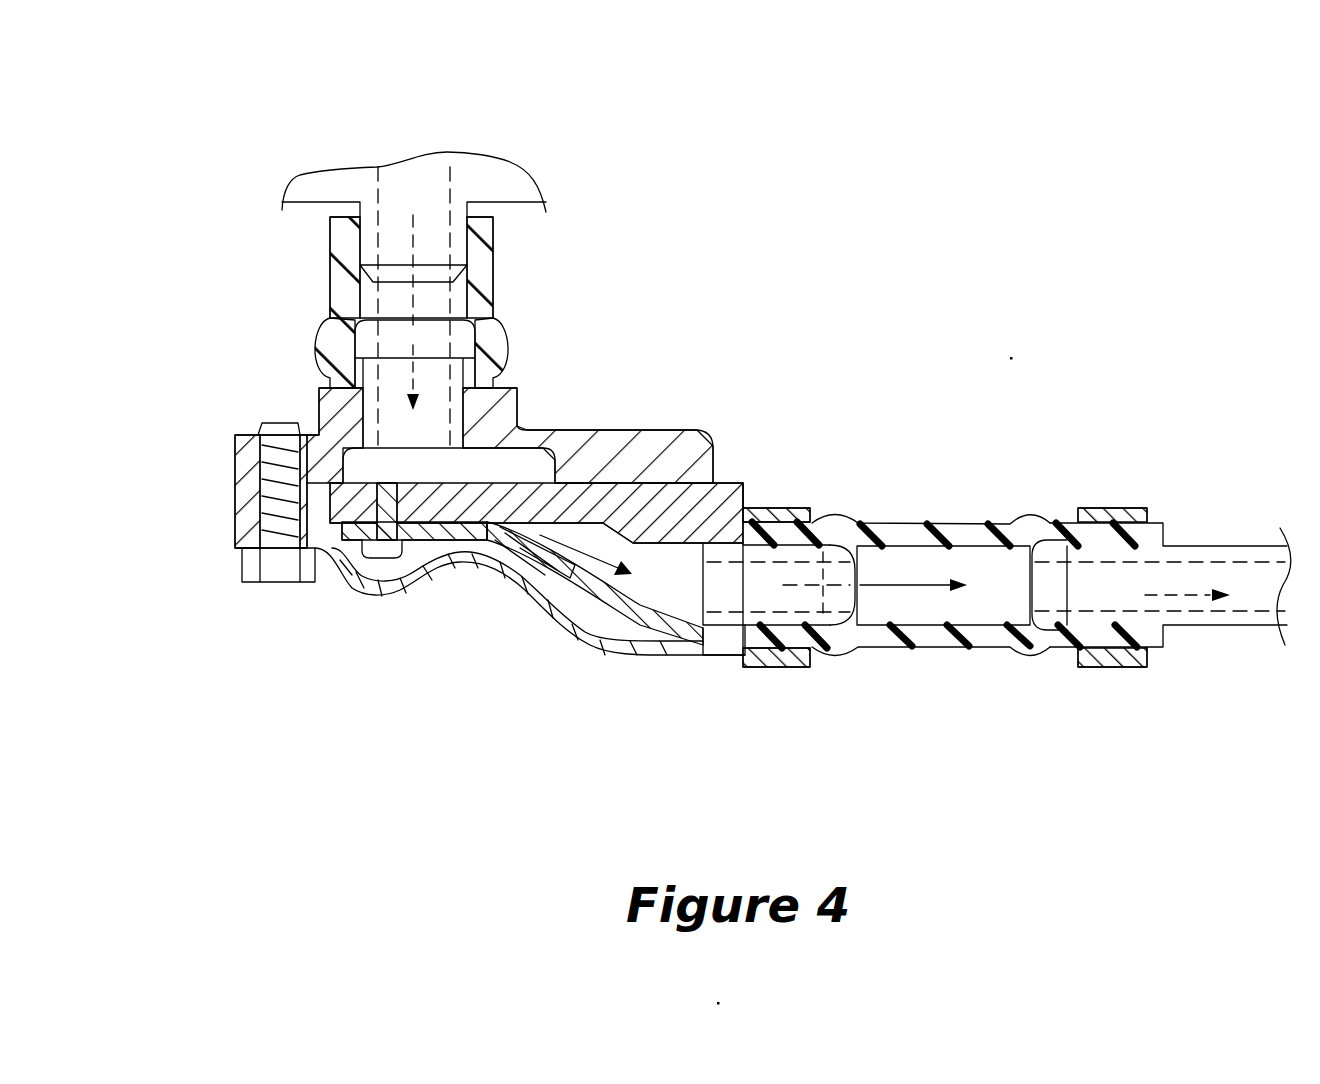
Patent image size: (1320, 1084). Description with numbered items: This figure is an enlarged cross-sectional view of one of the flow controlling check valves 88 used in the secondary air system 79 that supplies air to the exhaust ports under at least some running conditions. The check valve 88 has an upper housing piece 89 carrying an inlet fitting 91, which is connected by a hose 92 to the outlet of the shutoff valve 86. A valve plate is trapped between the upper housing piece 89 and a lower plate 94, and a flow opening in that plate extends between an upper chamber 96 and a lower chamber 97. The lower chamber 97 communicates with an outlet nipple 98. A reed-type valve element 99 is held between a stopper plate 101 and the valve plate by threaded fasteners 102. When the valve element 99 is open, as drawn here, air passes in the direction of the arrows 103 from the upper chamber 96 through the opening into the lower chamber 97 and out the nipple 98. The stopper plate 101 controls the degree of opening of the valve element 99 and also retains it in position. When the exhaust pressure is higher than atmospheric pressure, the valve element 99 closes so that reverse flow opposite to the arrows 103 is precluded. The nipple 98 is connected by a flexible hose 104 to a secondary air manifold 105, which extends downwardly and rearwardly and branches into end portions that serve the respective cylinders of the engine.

The secondary air system 79 is at (1133, 178).
The shutoff valve 86 is at (505, 177).
The check valve 88 is at (600, 668).
The upper housing piece 89 is at (340, 418).
The inlet fitting 91 is at (367, 343).
The hose 92 is at (327, 237).
The lower plate 94 is at (388, 590).
The upper chamber 96 is at (577, 400).
The lower chamber 97 is at (697, 580).
The outlet nipple 98 is at (800, 617).
The reed-type valve element 99 is at (548, 580).
The stopper plate 101 is at (487, 552).
The threaded fastener 102 is at (375, 553).
The arrows 103 is at (510, 500).
The flexible hose 104 is at (922, 645).
The secondary air manifold 105 is at (1218, 527).